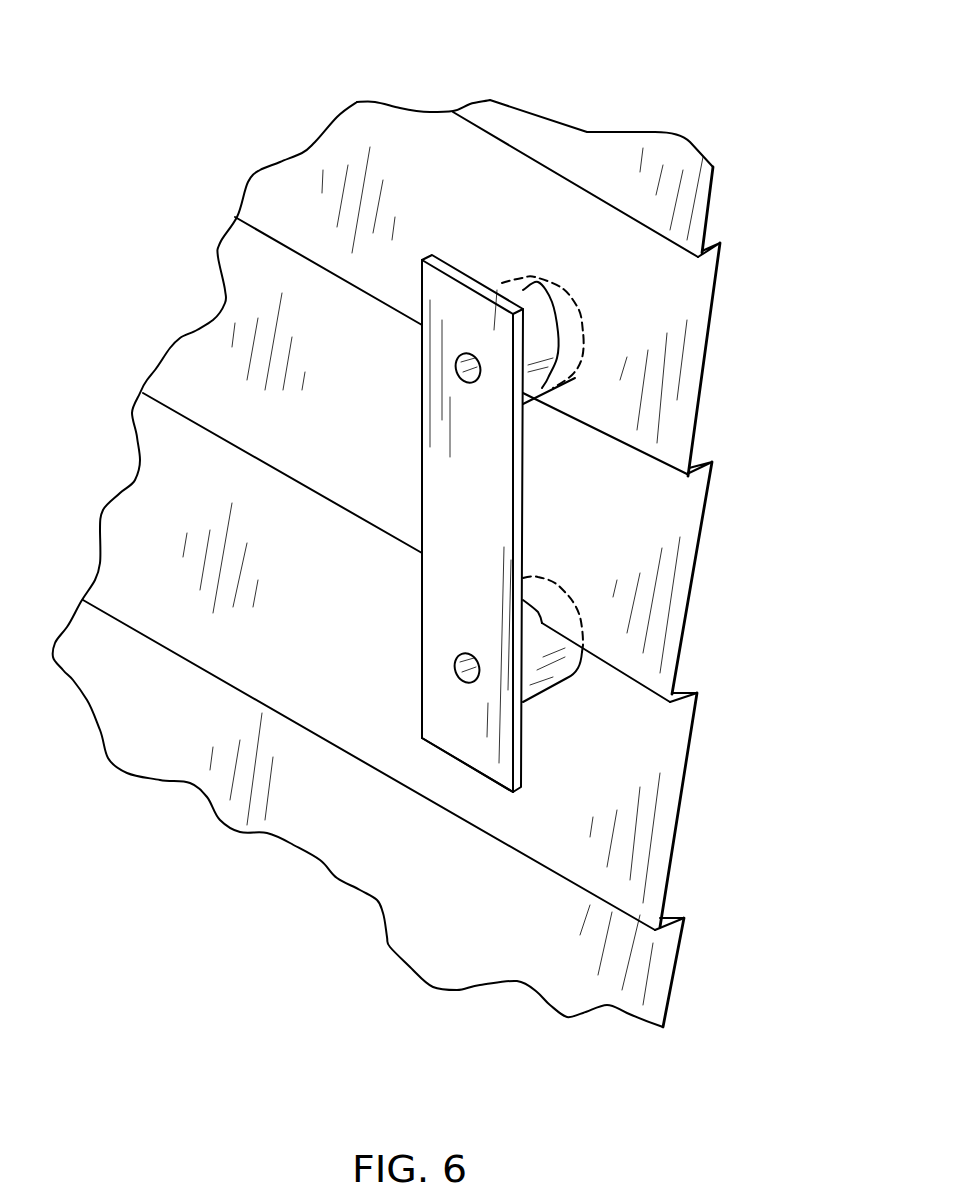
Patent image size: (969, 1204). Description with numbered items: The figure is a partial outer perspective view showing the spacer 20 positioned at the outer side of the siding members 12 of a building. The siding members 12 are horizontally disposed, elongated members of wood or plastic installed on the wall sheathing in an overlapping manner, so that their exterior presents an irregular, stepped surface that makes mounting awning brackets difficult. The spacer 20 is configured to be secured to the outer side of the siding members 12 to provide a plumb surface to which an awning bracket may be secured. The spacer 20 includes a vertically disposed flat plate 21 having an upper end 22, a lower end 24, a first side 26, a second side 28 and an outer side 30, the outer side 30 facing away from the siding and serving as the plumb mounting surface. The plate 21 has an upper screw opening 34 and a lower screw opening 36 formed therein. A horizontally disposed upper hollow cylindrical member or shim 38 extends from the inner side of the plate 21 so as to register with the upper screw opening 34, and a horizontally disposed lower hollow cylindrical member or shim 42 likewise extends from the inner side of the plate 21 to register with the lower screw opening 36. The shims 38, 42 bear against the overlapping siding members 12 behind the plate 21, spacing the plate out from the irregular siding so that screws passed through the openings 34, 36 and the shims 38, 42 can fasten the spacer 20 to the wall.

The siding members 12 is at (682, 317).
The spacer 20 is at (450, 232).
The flat plate 21 is at (414, 523).
The upper end 22 is at (463, 283).
The lower end 24 is at (455, 758).
The first side 26 is at (422, 620).
The second side 28 is at (523, 482).
The outer side 30 is at (456, 502).
The upper screw opening 34 is at (458, 357).
The lower screw opening 36 is at (457, 678).
The upper hollow cylindrical member or shim 38 is at (541, 282).
The lower hollow cylindrical member or shim 42 is at (556, 611).